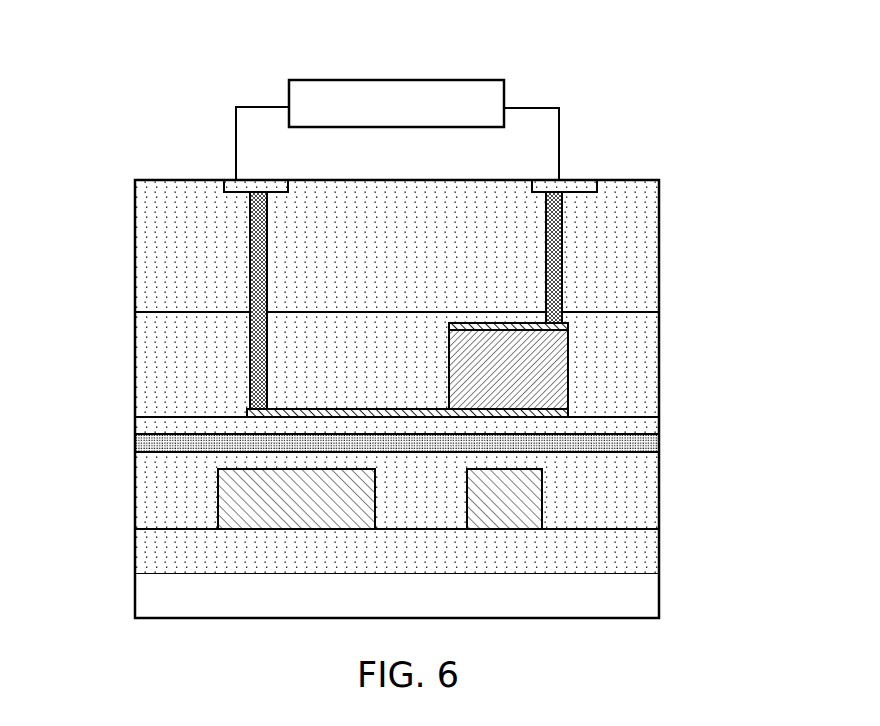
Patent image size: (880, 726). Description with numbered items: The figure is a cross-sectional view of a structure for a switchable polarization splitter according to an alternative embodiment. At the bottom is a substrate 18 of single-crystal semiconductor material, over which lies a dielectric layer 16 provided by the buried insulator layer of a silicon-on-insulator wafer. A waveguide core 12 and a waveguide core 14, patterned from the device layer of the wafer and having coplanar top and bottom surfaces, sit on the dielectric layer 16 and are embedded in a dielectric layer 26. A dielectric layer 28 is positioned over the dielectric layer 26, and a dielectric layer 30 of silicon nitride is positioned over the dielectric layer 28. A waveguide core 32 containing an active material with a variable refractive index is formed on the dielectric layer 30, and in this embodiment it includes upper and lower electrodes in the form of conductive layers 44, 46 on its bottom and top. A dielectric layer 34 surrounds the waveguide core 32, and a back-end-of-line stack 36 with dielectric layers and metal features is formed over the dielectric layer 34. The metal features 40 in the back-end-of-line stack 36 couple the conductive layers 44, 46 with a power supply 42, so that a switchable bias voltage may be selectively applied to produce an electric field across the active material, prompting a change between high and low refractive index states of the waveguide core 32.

The waveguide core 12 is at (268, 501).
The waveguide core 14 is at (510, 511).
The dielectric layer 16 is at (172, 552).
The substrate 18 is at (176, 603).
The dielectric layer 26 is at (635, 477).
The dielectric layer 28 is at (188, 441).
The dielectric layer 30 is at (633, 426).
The waveguide core 32 is at (540, 371).
The dielectric layer 34 is at (185, 347).
The back-end-of-line stack 36 is at (185, 258).
The metal features 40 is at (247, 185).
The power supply 42 is at (505, 91).
The conductive layer 44 is at (510, 410).
The conductive layer 46 is at (537, 324).